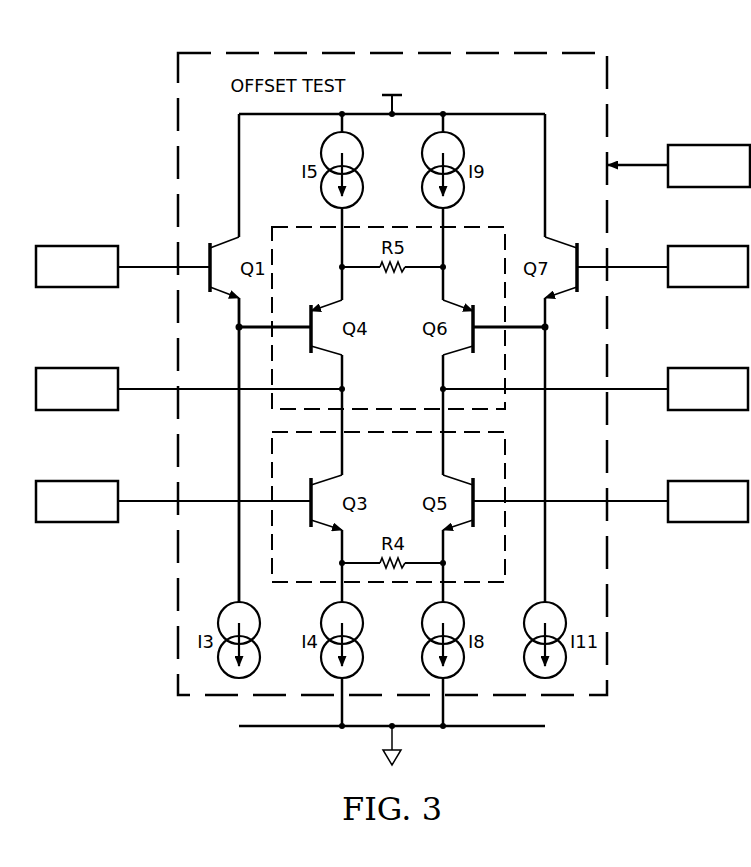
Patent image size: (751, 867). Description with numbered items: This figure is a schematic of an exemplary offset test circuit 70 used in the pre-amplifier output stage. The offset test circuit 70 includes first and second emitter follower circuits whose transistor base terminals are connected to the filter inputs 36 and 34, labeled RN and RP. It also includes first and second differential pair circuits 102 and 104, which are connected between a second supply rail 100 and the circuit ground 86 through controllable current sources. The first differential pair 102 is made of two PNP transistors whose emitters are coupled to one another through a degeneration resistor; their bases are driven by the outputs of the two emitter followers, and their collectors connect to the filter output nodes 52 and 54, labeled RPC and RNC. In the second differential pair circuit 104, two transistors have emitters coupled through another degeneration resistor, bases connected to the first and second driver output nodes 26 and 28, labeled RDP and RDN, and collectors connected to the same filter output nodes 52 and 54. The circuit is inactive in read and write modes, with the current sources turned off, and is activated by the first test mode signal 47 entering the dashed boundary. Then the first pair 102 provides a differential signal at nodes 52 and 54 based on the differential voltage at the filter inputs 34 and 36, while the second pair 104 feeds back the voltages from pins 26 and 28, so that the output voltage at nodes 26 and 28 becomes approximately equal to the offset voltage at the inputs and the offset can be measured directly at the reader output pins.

The offset test circuit 70 is at (296, 52).
The second supply rail 100 is at (495, 112).
The first differential pair circuit 102 is at (368, 395).
The second differential pair circuit 104 is at (368, 479).
The filter input 36 is at (150, 265).
The filter input 34 is at (637, 265).
The filter output node 52 is at (150, 387).
The filter output node 54 is at (637, 391).
The first driver output node 26 is at (152, 503).
The second driver output node 28 is at (637, 503).
The TEST1 control signal 47 is at (637, 162).
The circuit ground 86 is at (492, 729).